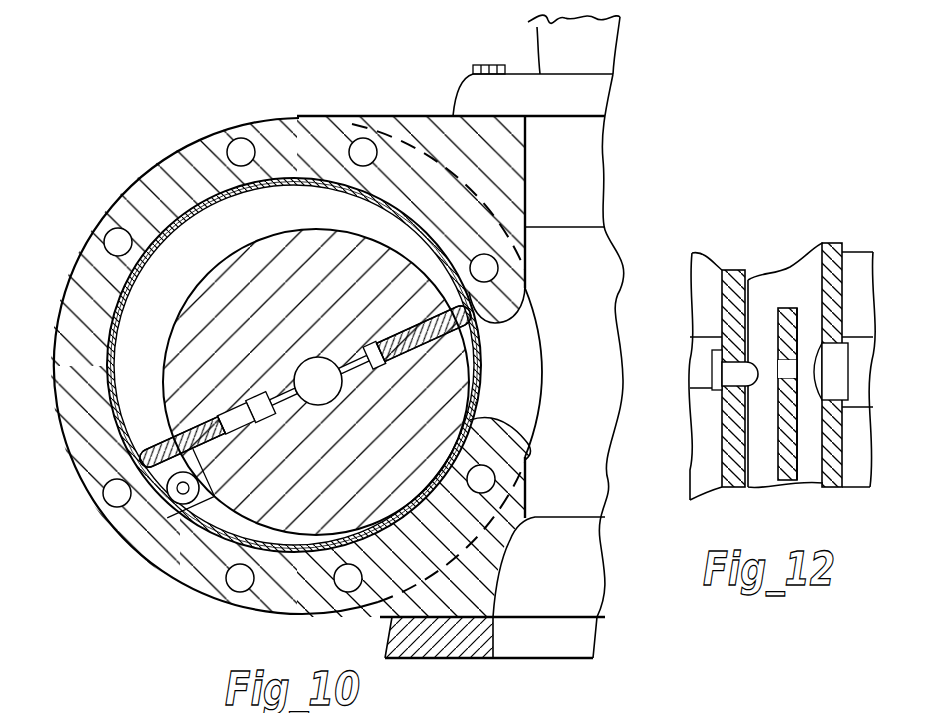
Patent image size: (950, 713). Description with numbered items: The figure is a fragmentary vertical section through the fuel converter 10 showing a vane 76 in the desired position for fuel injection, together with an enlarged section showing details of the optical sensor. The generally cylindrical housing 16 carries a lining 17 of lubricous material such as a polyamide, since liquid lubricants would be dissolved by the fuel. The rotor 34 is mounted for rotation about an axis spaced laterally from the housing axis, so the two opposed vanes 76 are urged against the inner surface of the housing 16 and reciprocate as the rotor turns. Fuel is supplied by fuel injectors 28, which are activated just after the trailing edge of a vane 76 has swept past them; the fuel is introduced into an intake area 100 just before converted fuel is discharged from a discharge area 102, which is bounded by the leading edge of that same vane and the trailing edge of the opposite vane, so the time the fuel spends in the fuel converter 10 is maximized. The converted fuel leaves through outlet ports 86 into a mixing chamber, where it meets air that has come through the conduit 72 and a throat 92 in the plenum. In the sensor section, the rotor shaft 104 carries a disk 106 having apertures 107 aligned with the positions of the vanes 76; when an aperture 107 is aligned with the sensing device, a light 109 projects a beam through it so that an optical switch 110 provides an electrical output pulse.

In FIG. 10, the fuel converter 10 is at (118, 134).
In FIG. 10, the housing 16 is at (215, 143).
In FIG. 10, the lining 17 is at (328, 183).
In FIG. 10, the fuel injectors 28 is at (126, 547).
In FIG. 10, the rotor 34 is at (250, 507).
In FIG. 10, the conduit 72 is at (603, 50).
In FIG. 10, the vanes 76 is at (483, 335).
In FIG. 10, the outlet ports 86 is at (503, 413).
In FIG. 10, the throat 92 is at (585, 180).
In FIG. 10, the intake area 100 is at (205, 515).
In FIG. 10, the discharge area 102 is at (177, 267).
In FIG. 10, the rotor shaft 104 is at (335, 382).
In FIG. 12, the disk 106 is at (800, 467).
In FIG. 12, the apertures 107 is at (774, 368).
In FIG. 12, the light 109 is at (737, 378).
In FIG. 12, the optical switch 110 is at (720, 248).